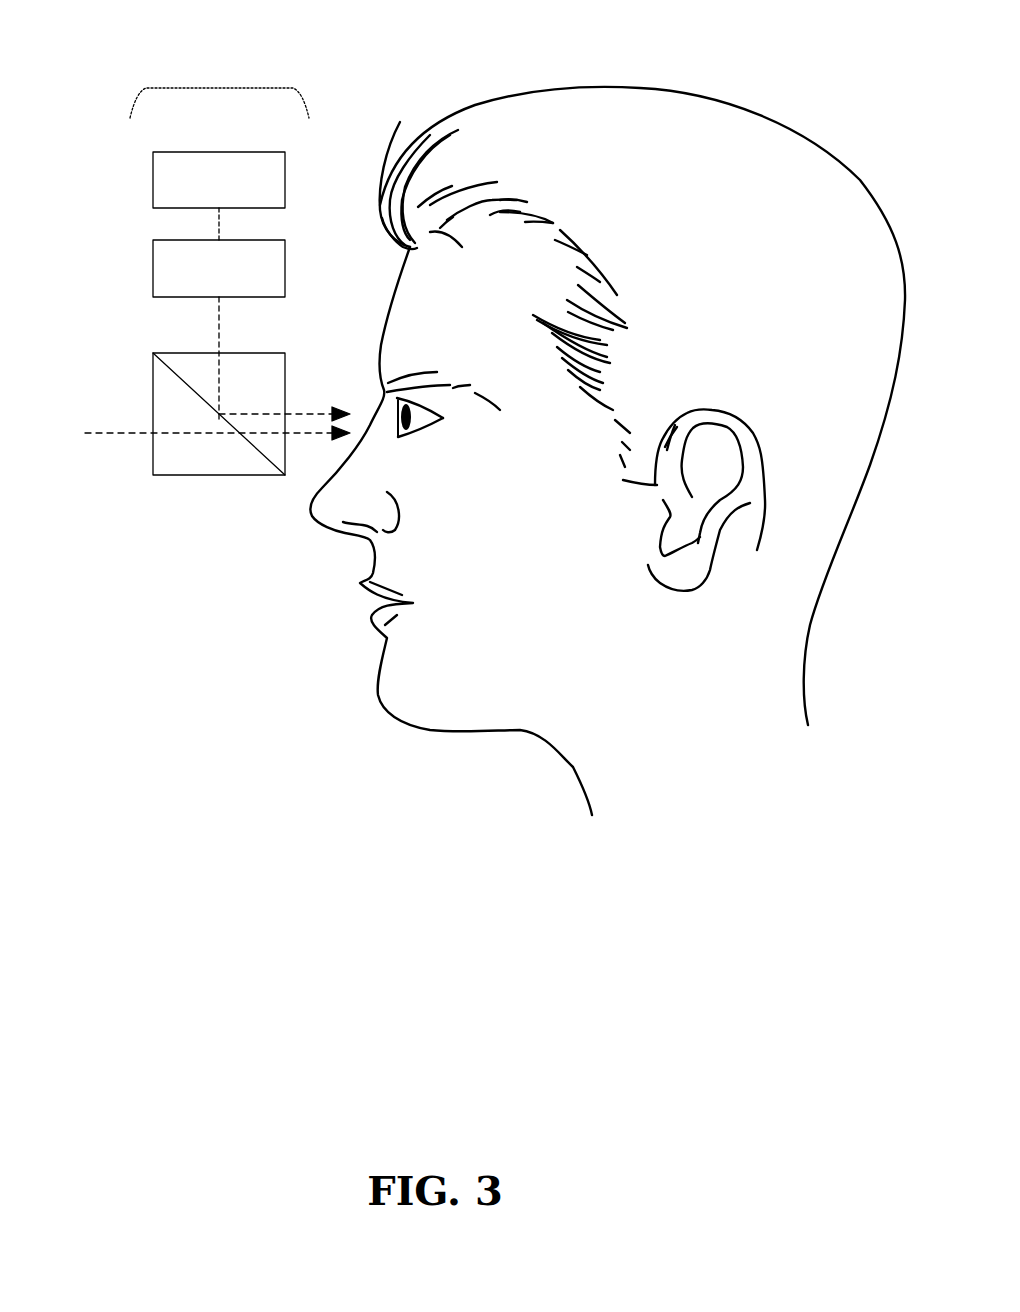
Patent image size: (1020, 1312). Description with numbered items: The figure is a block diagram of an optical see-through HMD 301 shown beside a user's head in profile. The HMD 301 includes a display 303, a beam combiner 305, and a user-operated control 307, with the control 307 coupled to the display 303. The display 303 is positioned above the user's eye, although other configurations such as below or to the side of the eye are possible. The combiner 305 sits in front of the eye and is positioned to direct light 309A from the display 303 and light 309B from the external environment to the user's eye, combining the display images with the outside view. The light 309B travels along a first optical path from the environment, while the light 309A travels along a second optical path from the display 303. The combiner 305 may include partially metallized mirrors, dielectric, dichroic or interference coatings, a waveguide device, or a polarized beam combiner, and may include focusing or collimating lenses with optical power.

The optical see-through HMD 301 is at (219, 88).
The display 303 is at (219, 268).
The beam combiner 305 is at (200, 475).
The user-operated control 307 is at (219, 180).
The light from the display 309A is at (218, 314).
The light from the external environment 309B is at (85, 433).